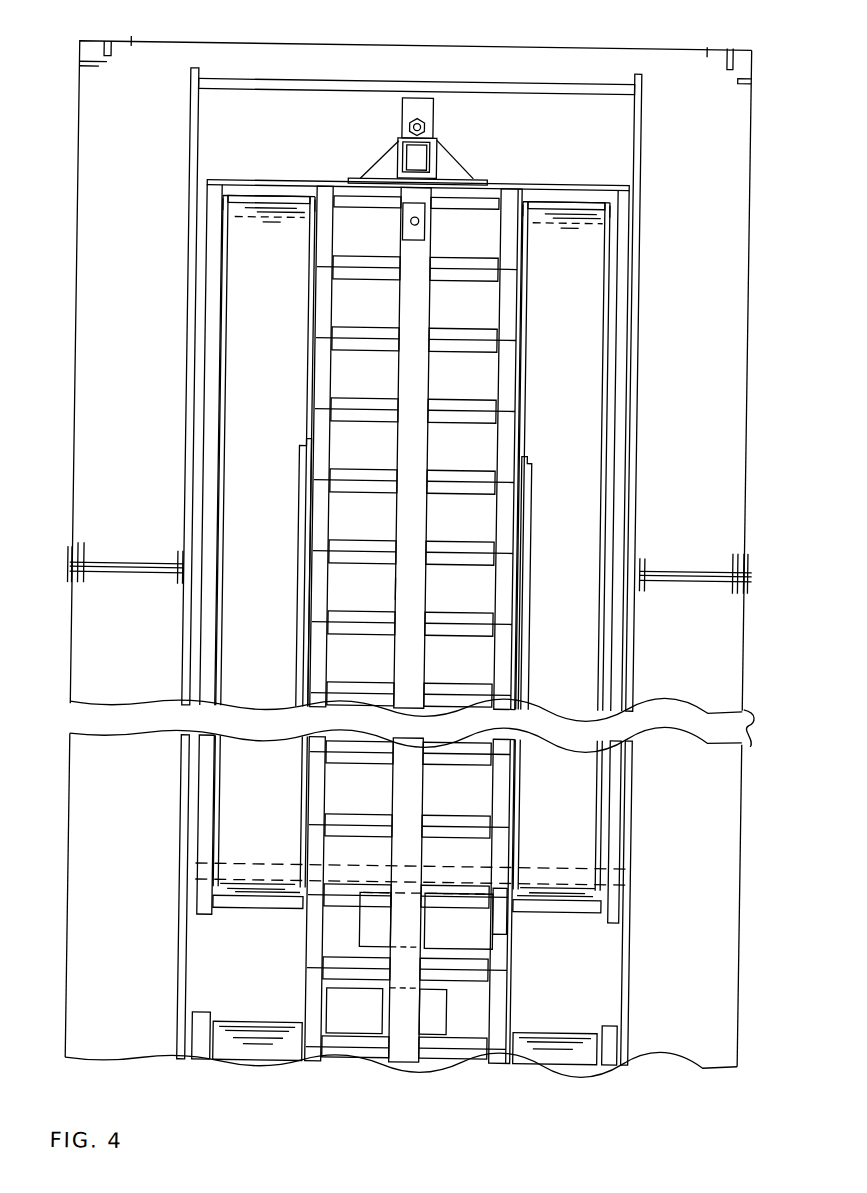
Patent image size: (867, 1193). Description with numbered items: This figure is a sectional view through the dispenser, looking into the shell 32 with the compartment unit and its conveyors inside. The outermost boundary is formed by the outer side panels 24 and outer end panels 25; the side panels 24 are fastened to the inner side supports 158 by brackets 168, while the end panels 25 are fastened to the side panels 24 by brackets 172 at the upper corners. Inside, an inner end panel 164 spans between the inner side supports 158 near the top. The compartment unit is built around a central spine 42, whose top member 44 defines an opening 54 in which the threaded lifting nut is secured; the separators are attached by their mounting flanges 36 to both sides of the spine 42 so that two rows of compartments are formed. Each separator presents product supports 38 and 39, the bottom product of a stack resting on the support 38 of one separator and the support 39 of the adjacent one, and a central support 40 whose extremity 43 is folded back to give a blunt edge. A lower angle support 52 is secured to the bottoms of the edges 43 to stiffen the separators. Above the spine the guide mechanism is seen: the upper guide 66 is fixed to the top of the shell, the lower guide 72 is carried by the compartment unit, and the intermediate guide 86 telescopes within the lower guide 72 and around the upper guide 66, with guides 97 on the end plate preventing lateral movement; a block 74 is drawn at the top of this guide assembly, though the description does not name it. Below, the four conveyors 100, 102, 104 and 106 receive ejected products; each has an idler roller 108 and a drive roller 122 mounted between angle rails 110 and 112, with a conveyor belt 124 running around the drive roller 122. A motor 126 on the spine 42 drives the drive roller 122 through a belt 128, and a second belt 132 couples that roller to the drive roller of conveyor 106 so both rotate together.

The side panel 24 is at (746, 458).
The end panel 25 is at (495, 46).
The shell 32 is at (253, 70).
The mounting flange 36 is at (428, 556).
The product support 38 is at (462, 474).
The product support 39 is at (451, 489).
The central support 40 is at (445, 407).
The central spine 42 is at (393, 590).
The extremity 43 is at (503, 340).
The top member 44 is at (401, 450).
The lower angle support 52 is at (298, 503).
The opening 54 is at (398, 221).
The guide 66 is at (408, 155).
The lower guide 72 is at (424, 143).
The mounting block 74 is at (418, 111).
The intermediate guide 86 is at (427, 160).
The guide 97 is at (380, 150).
The conveyor 100 is at (590, 806).
The conveyor 102 is at (232, 782).
The conveyor 104 is at (202, 1042).
The conveyor 106 is at (617, 1043).
The idler roller 108 is at (263, 208).
The angle rail 110 is at (203, 464).
The angle rail 112 is at (314, 387).
The drive roller 122 is at (594, 865).
The conveyor belt 124 is at (228, 361).
The motor 126 is at (489, 941).
The belt 128 is at (515, 911).
The second belt 132 is at (518, 1003).
The inner side support 158 is at (188, 416).
The inner end panel 164 is at (353, 82).
The bracket 168 is at (138, 566).
The bracket 172 is at (91, 46).